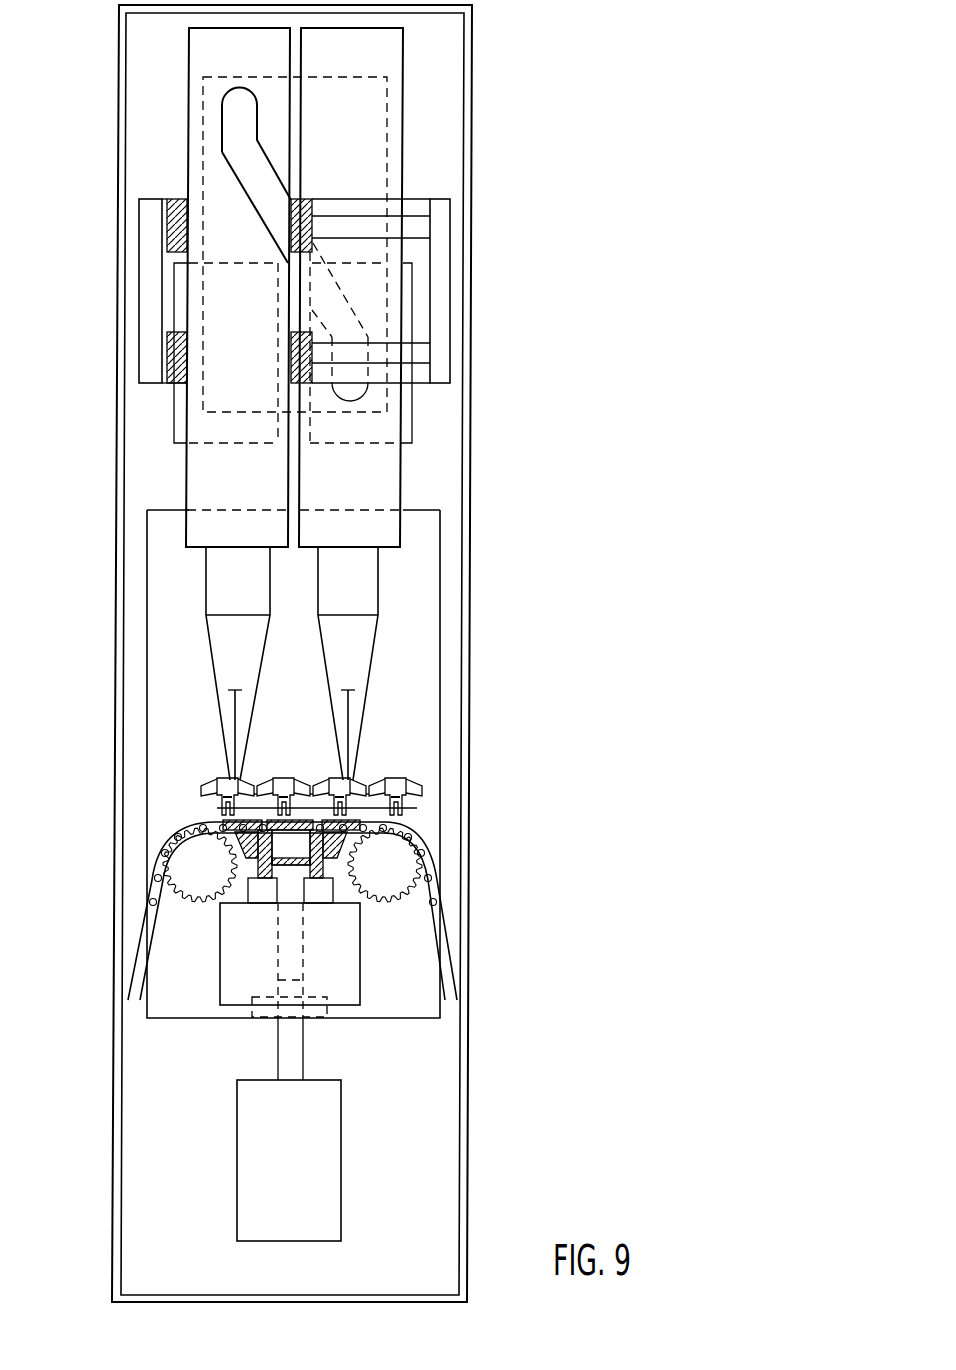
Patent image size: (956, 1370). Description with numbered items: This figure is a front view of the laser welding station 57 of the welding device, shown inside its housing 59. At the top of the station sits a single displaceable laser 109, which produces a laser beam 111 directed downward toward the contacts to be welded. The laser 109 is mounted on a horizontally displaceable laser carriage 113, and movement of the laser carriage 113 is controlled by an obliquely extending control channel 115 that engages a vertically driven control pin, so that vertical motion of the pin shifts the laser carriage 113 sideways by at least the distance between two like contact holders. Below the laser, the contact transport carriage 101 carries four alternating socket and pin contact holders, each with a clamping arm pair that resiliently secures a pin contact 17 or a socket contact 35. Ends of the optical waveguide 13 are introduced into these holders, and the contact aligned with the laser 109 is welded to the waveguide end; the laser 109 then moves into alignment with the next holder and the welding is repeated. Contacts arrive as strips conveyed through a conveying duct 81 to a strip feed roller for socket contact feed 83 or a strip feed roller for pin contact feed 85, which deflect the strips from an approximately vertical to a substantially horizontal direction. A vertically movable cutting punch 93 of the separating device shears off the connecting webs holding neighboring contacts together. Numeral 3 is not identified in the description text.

The cannula 3 is at (348, 705).
The optical waveguide 13 is at (233, 710).
The pin contact 17 is at (423, 868).
The socket contact 35 is at (157, 888).
The laser welding station 57 is at (495, 455).
The housing 59 is at (448, 98).
The conveying duct 81 is at (138, 955).
The strip feed roller for socket contact feed 83 is at (195, 890).
The strip feed roller for pin contact feed 85 is at (387, 890).
The cutting punch 93 is at (320, 890).
The contact transport carriage 101 is at (368, 803).
The laser 109 is at (199, 487).
The laser beam 111 is at (228, 652).
The laser carriage 113 is at (438, 270).
The control channel 115 is at (243, 180).